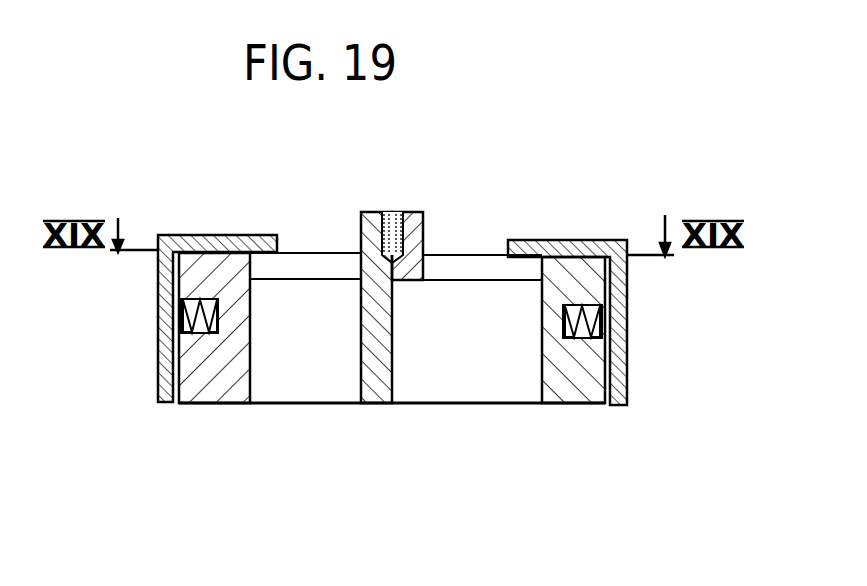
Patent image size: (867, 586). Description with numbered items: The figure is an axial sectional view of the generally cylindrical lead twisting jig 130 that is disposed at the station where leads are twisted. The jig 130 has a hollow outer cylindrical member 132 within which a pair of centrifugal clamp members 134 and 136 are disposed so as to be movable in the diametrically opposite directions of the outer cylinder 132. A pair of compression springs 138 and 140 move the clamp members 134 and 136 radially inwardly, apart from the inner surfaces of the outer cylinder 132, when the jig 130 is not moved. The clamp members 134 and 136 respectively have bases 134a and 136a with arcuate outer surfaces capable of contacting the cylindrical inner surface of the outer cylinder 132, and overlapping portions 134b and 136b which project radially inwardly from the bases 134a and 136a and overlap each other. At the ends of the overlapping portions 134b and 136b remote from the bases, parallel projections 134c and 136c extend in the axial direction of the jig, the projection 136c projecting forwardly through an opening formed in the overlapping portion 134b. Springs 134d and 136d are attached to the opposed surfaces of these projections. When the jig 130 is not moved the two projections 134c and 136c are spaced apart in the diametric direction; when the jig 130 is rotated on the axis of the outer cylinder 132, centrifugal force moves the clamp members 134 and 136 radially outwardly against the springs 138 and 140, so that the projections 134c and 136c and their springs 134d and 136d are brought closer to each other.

The jig 130 is at (199, 229).
The outer cylindrical member 132 is at (167, 361).
The centrifugal clamp member 134 is at (234, 414).
The base 134a is at (212, 380).
The overlapping portion 134b is at (320, 265).
The projection 134c is at (413, 190).
The spring 134d is at (398, 210).
The centrifugal clamp member 136 is at (559, 416).
The base 136a is at (582, 383).
The overlapping portion 136b is at (440, 380).
The projection 136c is at (360, 236).
The spring 136d is at (388, 210).
The compression spring 138 is at (183, 316).
The compression spring 140 is at (605, 318).